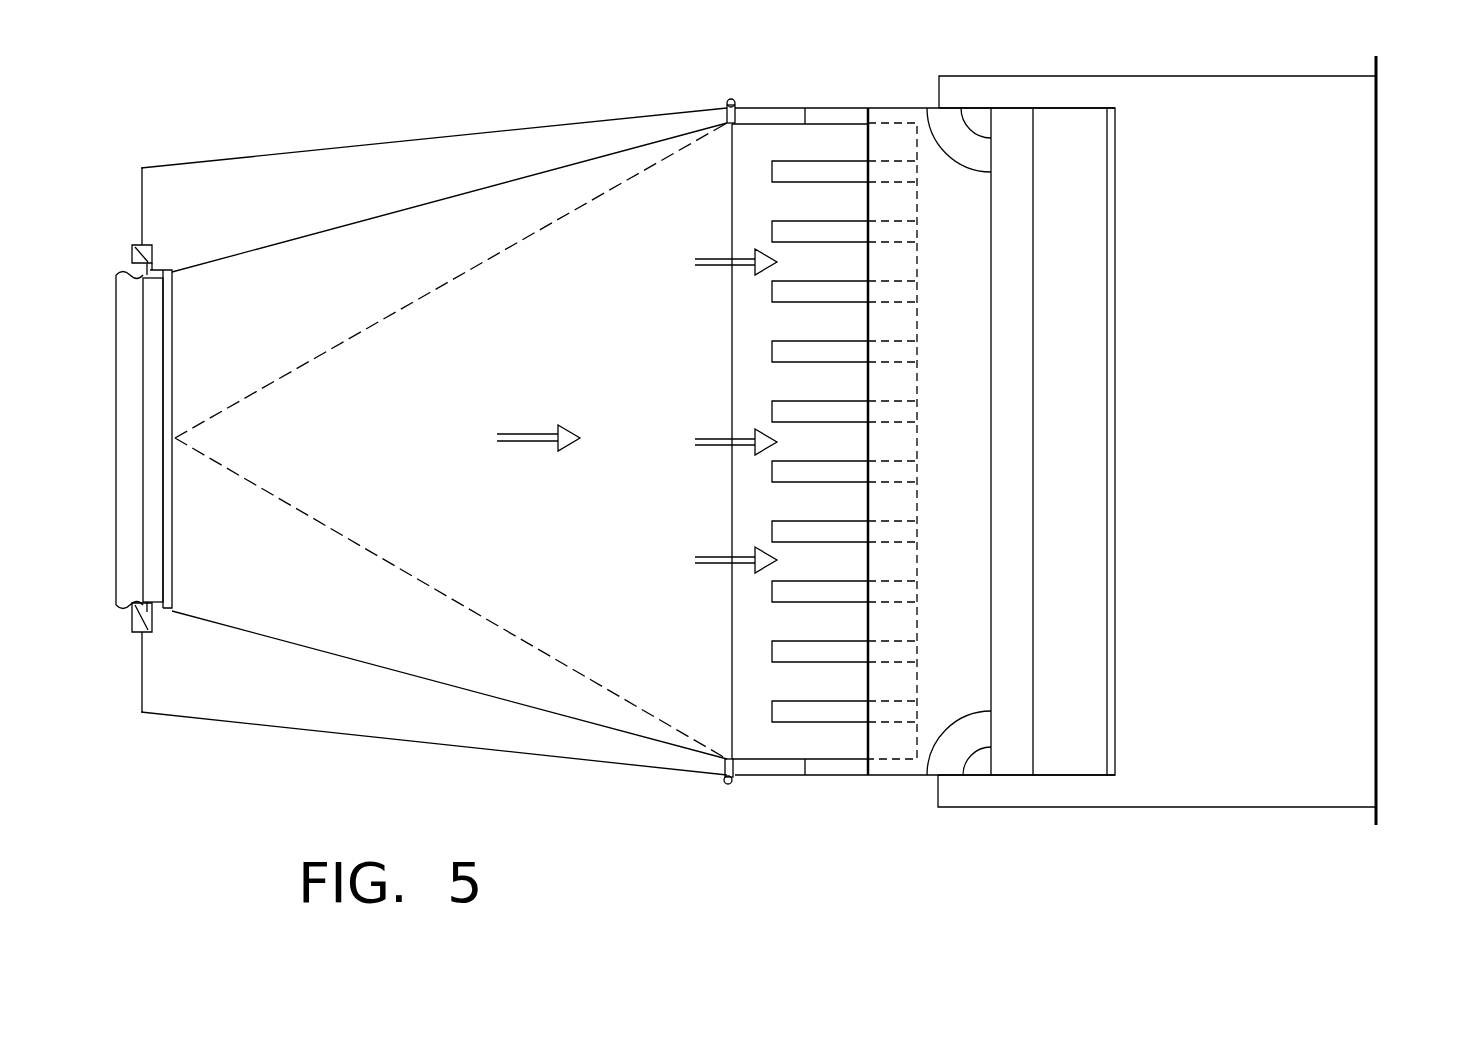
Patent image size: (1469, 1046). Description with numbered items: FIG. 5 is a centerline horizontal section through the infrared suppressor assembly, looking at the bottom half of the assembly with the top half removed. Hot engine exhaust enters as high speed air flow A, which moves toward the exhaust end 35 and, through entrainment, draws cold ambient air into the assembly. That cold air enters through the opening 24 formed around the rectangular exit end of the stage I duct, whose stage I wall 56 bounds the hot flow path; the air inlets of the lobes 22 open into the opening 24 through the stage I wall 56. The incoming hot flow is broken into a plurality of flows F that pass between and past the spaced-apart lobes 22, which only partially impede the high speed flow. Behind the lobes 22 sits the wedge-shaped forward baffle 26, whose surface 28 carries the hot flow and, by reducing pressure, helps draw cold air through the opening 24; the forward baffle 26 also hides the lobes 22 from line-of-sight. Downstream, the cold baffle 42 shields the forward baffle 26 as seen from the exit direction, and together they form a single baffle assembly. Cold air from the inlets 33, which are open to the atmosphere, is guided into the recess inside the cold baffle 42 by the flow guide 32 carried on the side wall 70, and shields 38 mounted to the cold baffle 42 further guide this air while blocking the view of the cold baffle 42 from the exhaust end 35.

The lobes 22 is at (772, 412).
The opening 24 is at (727, 105).
The forward baffle 26 is at (868, 338).
The surface 28 is at (968, 296).
The flow guide 32 is at (970, 127).
The inlets 33 is at (939, 92).
The exhaust end 35 is at (1378, 186).
The shields 38 is at (1086, 317).
The cold baffle 42 is at (1030, 249).
The stage I wall 56 is at (708, 655).
The side wall 70 is at (842, 776).
The flows F is at (708, 268).
The high speed air flow A is at (528, 443).